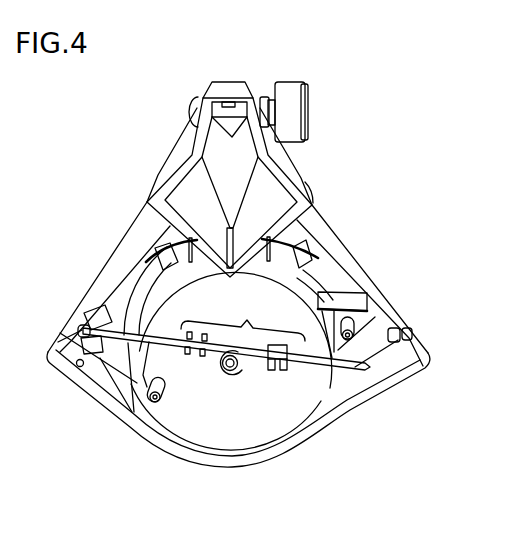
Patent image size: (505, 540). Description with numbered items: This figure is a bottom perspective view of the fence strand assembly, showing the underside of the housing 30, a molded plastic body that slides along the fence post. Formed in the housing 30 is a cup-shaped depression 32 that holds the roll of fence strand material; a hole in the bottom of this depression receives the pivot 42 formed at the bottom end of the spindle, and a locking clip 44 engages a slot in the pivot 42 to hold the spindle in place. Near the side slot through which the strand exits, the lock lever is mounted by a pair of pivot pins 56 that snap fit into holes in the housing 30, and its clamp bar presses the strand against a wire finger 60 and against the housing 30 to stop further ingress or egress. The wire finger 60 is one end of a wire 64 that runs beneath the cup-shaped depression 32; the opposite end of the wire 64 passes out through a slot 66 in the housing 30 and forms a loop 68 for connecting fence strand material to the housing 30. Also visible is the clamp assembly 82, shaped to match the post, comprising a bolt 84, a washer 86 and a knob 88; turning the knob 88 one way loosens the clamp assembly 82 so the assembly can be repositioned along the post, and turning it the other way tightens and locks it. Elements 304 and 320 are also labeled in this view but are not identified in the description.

The housing 30 is at (433, 0).
The cup-shaped depression 32 is at (198, 427).
The pivot 42 is at (238, 373).
The locking clip 44 is at (227, 373).
The pivot pins 56 is at (77, 367).
The wire finger 60 is at (90, 318).
The wire 64 is at (174, 343).
The slot 66 is at (393, 333).
The loop 68 is at (428, 355).
The clamp assembly 82 is at (160, 146).
The bolt 84 is at (230, 107).
The washer 86 is at (261, 99).
The knob 88 is at (295, 115).
The fastener bolt 304 is at (347, 323).
The adjustment region 320 is at (243, 329).